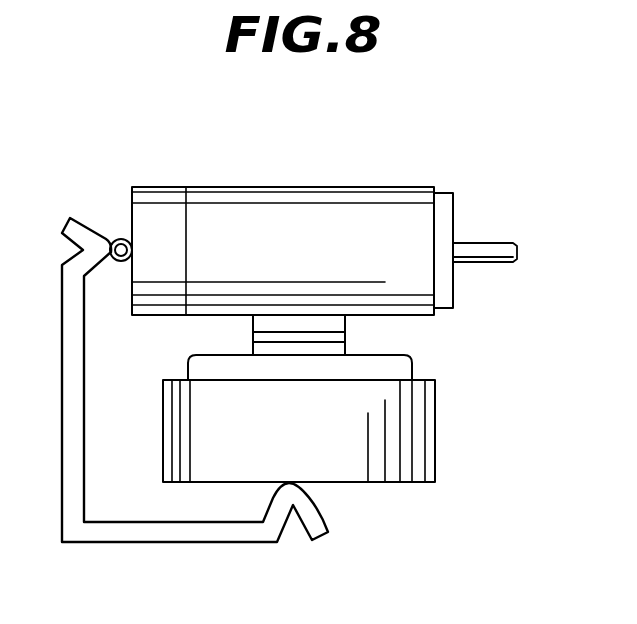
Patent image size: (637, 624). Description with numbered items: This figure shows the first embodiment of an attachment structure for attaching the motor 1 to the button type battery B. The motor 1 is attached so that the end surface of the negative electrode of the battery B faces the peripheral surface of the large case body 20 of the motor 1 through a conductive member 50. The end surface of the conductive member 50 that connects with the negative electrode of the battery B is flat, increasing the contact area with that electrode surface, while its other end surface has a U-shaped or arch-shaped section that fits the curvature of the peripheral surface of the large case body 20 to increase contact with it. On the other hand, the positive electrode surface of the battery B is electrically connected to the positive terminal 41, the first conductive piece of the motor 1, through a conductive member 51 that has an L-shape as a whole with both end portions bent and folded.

The motor 1 is at (285, 173).
The large case body 20 is at (383, 221).
The positive terminal (first conductive piece) 41 is at (130, 224).
The conductive member 50 is at (345, 335).
The conductive member 51 is at (172, 537).
The button type battery B is at (435, 430).